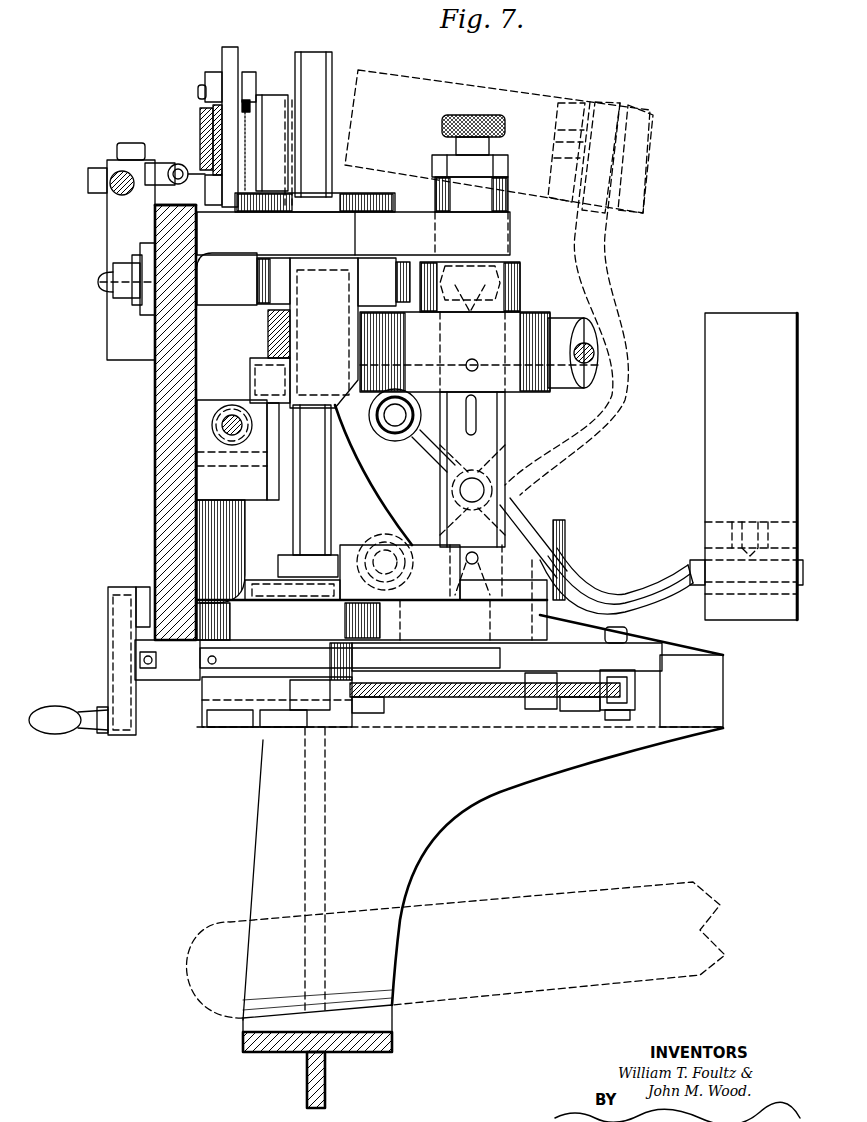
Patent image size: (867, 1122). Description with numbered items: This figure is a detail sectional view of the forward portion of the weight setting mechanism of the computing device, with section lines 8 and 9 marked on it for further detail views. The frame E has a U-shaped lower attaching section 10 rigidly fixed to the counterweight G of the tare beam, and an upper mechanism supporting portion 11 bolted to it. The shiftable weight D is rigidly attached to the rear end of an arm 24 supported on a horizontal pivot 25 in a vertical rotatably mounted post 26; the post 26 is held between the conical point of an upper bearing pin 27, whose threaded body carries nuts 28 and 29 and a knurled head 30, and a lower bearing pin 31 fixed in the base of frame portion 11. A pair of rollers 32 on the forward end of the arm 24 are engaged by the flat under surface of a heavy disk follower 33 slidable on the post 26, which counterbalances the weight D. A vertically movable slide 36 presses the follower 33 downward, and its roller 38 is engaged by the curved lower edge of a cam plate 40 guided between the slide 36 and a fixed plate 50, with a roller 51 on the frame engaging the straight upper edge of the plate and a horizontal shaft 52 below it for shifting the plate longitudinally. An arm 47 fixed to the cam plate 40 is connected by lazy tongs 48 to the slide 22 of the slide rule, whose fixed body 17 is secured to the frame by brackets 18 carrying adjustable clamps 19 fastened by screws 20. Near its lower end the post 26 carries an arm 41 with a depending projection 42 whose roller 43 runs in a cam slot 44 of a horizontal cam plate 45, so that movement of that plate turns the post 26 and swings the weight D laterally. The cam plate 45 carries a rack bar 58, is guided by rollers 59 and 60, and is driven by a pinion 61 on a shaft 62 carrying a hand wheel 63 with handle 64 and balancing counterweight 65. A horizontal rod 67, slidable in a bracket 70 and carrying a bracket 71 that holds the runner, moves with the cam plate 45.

The lower attaching section 10 is at (340, 152).
The upper mechanism supporting portion 11 is at (158, 510).
The fixed body portion 17 is at (203, 125).
The brackets 18 is at (222, 57).
The adjustable clamps 19 is at (208, 80).
The screws 20 is at (200, 93).
The slide 22 is at (216, 140).
The arm 24 is at (624, 596).
The horizontal pivot 25 is at (492, 490).
The post 26 is at (506, 420).
The bearing pin 27 is at (482, 236).
The nut 28 is at (508, 165).
The nut 29 is at (500, 276).
The knurled head 30 is at (505, 126).
The lower bearing pin 31 is at (478, 628).
The rollers 32 is at (398, 272).
The follower 33 is at (522, 314).
The slide 36 is at (310, 58).
The roller 38 is at (256, 380).
The cam plate 40 is at (282, 345).
The arm 41 is at (566, 548).
The depending projection 42 is at (578, 580).
The roller 43 is at (525, 703).
The cam slot 44 is at (560, 710).
The cam plate 45 is at (450, 697).
The arm 47 is at (278, 97).
The lazy tongs 48 is at (248, 72).
The plate 50 is at (264, 498).
The roller 51 is at (278, 255).
The horizontal shaft 52 is at (222, 422).
The rack bar 58 is at (380, 706).
The guide roller 59 is at (302, 730).
The guide roller 60 is at (606, 712).
The pinion 61 is at (333, 645).
The horizontal shaft 62 is at (250, 680).
The hand wheel 63 is at (132, 712).
The handle 64 is at (70, 716).
The counterweight 65 is at (142, 590).
The horizontal rod 67 is at (114, 190).
The bracket 70 is at (107, 240).
The bracket 71 is at (168, 166).
The section line 8— 8 is at (454, 660).
The section line 9— 9 is at (378, 523).
The shiftable weight D is at (647, 180).
The frame E is at (262, 818).
The counterweight G is at (545, 896).